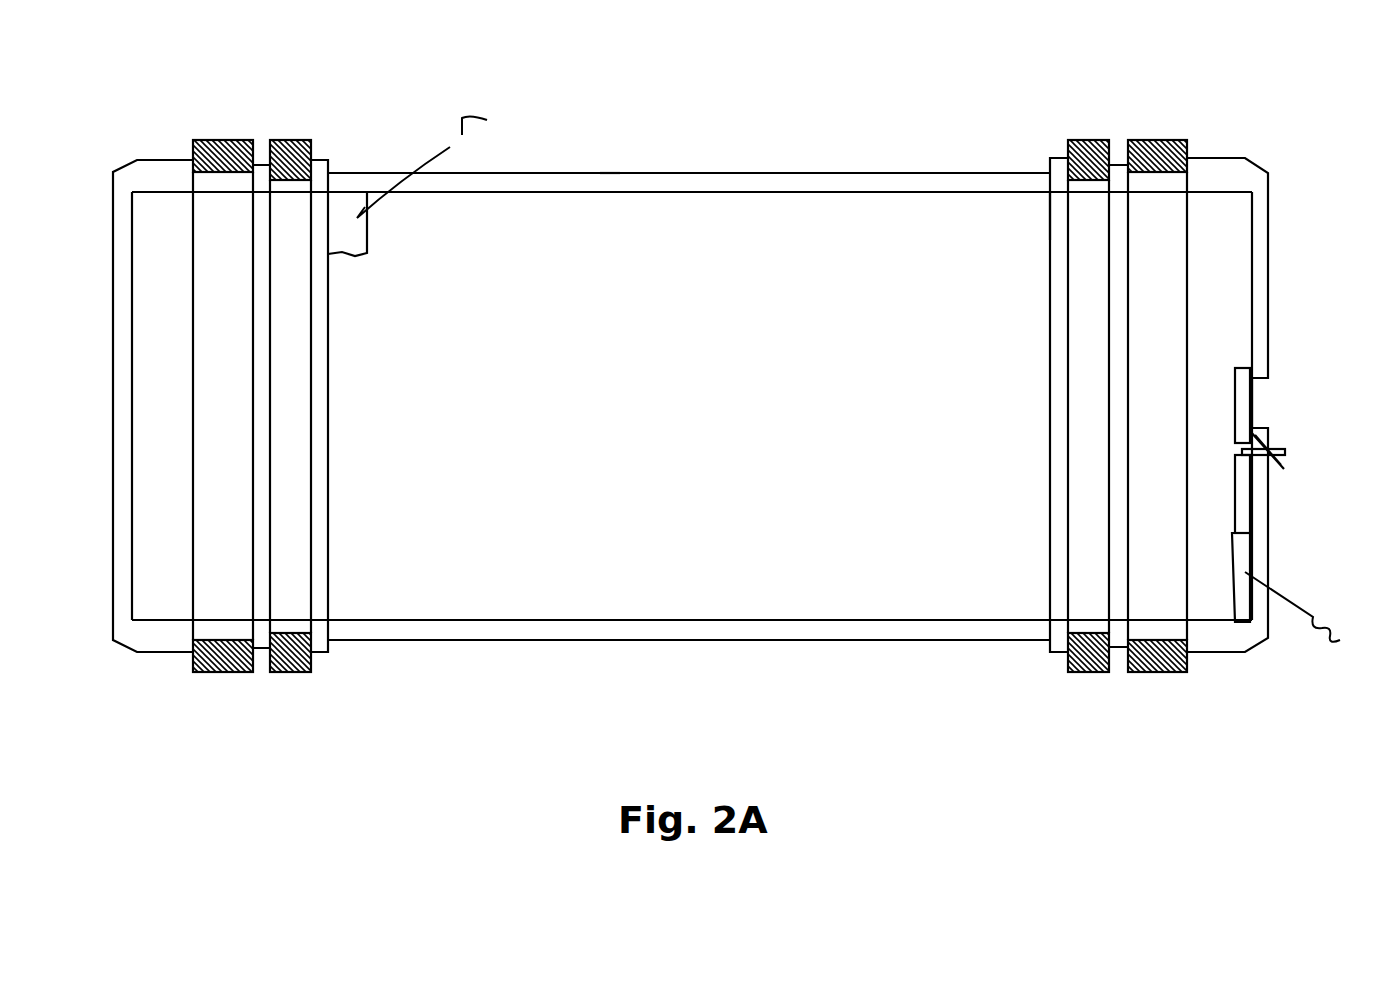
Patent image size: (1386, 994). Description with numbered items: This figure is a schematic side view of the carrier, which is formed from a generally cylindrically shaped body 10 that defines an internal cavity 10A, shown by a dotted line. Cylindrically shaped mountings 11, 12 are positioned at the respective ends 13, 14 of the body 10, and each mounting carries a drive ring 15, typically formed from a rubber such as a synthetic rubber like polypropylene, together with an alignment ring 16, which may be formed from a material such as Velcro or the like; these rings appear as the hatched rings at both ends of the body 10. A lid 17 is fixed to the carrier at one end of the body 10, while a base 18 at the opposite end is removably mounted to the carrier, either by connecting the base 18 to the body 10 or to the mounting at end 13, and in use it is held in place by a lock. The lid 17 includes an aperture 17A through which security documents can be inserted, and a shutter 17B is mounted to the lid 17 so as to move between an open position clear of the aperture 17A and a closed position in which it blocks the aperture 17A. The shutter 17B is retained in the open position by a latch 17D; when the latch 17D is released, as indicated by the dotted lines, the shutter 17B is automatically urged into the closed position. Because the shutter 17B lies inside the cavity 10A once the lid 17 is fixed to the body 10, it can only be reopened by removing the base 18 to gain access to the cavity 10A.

The body 10 is at (675, 417).
The internal cavity 10A is at (600, 192).
The mounting 11 is at (298, 230).
The mounting 12 is at (1068, 240).
The end 13 is at (343, 577).
The end 14 is at (1019, 584).
The drive ring 15 is at (292, 140).
The alignment ring 16 is at (225, 140).
The lid 17 is at (1217, 235).
The aperture 17A is at (1280, 395).
The shutter 17B is at (1252, 492).
The latch 17D is at (1283, 453).
The base 18 is at (125, 452).